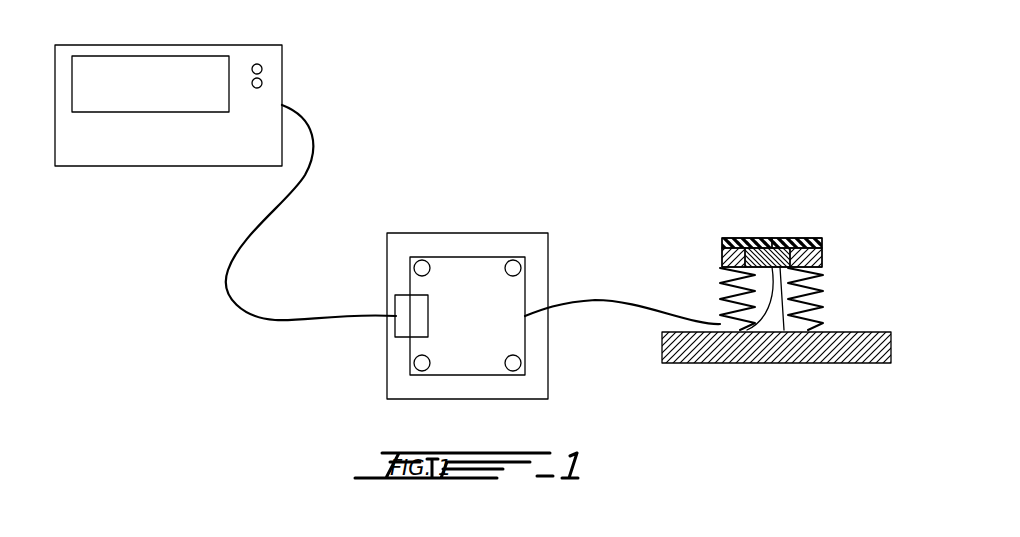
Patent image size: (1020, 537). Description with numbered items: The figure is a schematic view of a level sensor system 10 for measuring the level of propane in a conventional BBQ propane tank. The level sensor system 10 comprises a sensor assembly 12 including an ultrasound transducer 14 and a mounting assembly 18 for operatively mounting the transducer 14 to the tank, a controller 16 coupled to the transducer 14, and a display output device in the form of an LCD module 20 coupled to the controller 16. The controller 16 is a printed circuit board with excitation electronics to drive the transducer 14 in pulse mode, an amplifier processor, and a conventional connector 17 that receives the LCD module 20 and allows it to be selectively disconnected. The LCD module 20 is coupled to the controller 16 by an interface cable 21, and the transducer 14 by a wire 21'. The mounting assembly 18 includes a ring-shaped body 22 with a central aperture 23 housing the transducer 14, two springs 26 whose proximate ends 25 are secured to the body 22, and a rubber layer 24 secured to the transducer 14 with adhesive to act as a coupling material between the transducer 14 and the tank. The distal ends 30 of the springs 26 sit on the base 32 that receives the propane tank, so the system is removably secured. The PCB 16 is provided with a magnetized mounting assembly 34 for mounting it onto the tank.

The level sensor system 10 is at (668, 146).
The sensor assembly 12 is at (760, 232).
The ultrasound transducer 14 is at (783, 332).
The controller 16 is at (445, 347).
The connector 17 is at (412, 321).
The mounting assembly 18 is at (712, 289).
The LCD module 20 is at (233, 42).
The interface cable 21 is at (311, 212).
The wire 21' is at (622, 262).
The ring-shaped body 22 is at (823, 250).
The central aperture 23 is at (736, 238).
The rubber layer 24 is at (790, 246).
The proximate end 25 is at (823, 262).
The springs 26 is at (823, 306).
The distal ends 30 is at (803, 332).
The base 32 is at (866, 363).
The magnetized mounting assembly 34 is at (510, 399).